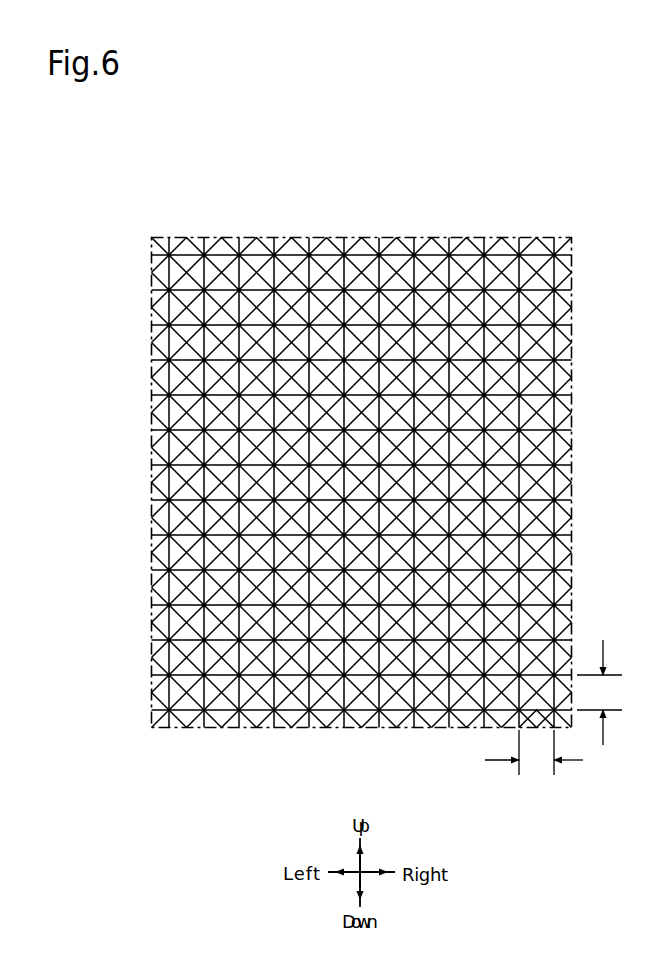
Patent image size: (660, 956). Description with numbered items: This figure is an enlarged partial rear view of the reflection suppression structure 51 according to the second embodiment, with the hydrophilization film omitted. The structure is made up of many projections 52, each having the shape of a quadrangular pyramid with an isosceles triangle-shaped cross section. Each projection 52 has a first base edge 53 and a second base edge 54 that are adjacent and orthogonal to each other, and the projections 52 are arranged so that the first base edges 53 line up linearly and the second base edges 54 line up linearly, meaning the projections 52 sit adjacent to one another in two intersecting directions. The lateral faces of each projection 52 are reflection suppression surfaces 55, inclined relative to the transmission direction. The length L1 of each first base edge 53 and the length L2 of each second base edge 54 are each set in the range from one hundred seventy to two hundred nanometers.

The reflection suppression structure 51 is at (370, 479).
The projection 52 is at (557, 380).
The first base edge 53 is at (553, 692).
The second base edge 54 is at (535, 731).
The reflection suppression surface 55 is at (207, 272).
The length of first base edge L1 is at (605, 692).
The length of second base edge L2 is at (535, 762).